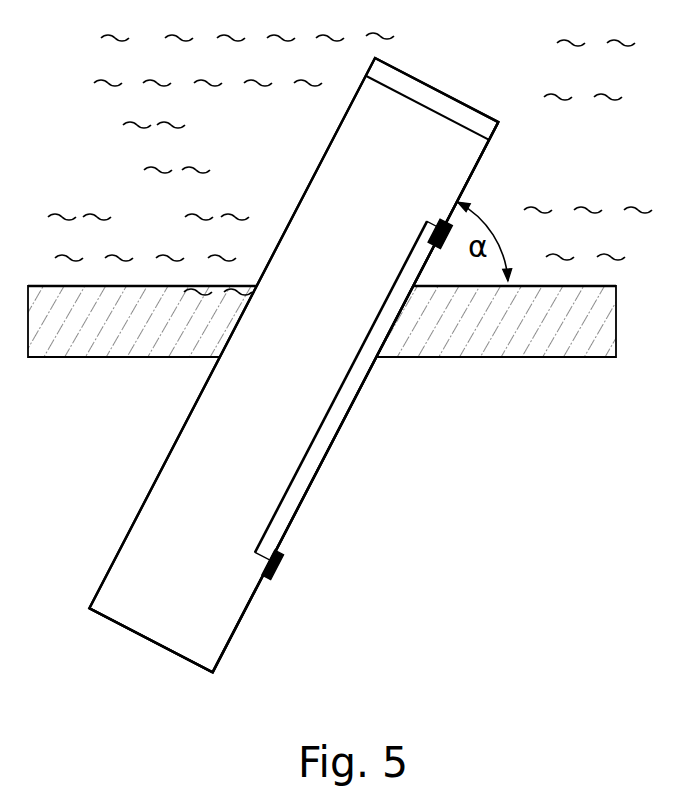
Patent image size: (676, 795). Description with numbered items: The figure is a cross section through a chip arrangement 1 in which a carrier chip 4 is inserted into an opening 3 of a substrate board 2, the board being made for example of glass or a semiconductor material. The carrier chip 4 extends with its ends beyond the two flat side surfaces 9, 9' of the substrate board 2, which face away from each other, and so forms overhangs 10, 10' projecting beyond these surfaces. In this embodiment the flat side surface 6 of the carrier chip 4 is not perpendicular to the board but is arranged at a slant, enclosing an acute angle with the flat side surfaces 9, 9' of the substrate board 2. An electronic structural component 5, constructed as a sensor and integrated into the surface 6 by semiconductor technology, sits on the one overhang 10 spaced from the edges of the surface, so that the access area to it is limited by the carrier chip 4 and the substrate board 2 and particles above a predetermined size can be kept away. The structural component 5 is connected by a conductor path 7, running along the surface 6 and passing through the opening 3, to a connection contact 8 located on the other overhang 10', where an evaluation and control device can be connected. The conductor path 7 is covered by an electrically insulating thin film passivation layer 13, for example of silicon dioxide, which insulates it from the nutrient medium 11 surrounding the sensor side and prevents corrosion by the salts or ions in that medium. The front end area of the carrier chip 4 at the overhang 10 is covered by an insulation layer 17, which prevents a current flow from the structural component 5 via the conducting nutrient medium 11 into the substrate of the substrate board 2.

The chip arrangement 1 is at (553, 549).
The substrate board 2 is at (545, 337).
The opening 3 is at (264, 340).
The carrier chip 4 is at (153, 645).
The electronic structural component 5 is at (438, 220).
The flat side surface of the carrier chip 6 is at (478, 168).
The conductor path 7 is at (318, 433).
The connection contact 8 is at (277, 563).
The flat side surface of the substrate board 9 is at (322, 244).
The flat side surface of the substrate board 9' is at (322, 405).
The overhang 10 is at (293, 365).
The overhang 10' is at (352, 665).
The nutrient medium 11 is at (103, 179).
The passivation layer 13 is at (348, 393).
The insulation layer 17 is at (440, 102).